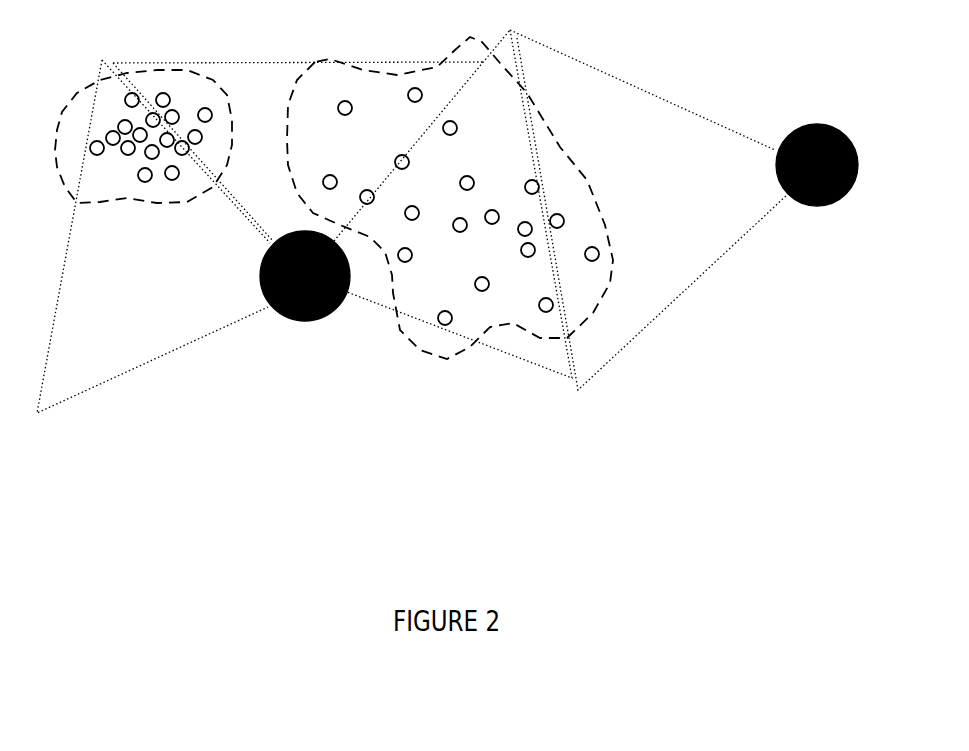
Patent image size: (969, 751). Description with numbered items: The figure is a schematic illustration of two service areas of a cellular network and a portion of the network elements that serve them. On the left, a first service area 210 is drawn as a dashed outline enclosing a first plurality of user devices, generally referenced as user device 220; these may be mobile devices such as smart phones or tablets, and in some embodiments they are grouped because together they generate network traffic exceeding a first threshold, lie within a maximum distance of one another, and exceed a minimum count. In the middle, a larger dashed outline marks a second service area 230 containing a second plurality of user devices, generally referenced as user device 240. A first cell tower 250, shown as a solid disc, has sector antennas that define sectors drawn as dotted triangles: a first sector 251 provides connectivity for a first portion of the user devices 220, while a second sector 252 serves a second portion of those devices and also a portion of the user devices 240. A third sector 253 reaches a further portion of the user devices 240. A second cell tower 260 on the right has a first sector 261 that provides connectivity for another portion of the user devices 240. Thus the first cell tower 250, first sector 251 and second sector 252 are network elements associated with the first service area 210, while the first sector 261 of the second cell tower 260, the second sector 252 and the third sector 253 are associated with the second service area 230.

The first service area 210 is at (58, 130).
The user device 220 is at (177, 178).
The second service area 230 is at (586, 177).
The user device 240 is at (345, 115).
The first cell tower 250 is at (303, 320).
The first sector 251 is at (128, 372).
The second sector 252 is at (271, 63).
The third sector 253 is at (536, 365).
The second cell tower 260 is at (826, 207).
The first sector 261 is at (658, 100).